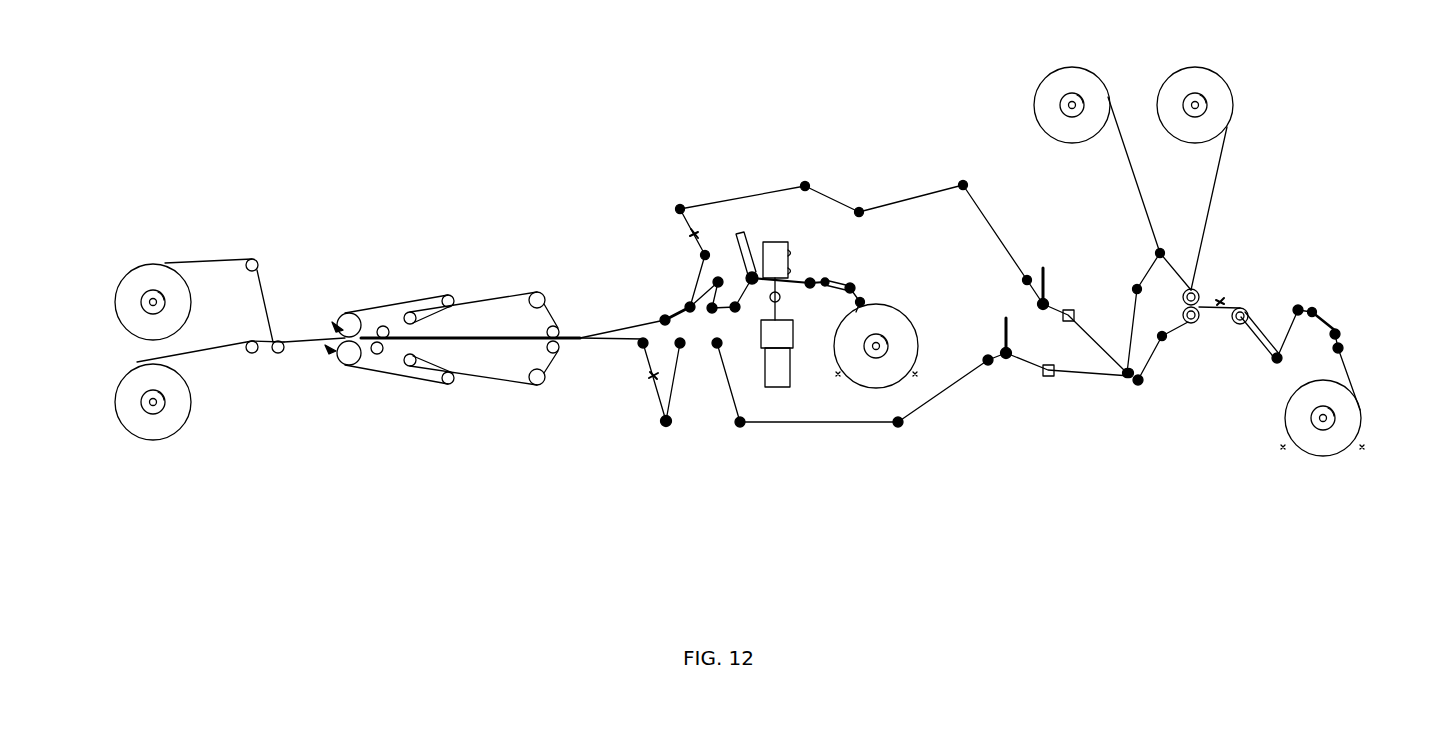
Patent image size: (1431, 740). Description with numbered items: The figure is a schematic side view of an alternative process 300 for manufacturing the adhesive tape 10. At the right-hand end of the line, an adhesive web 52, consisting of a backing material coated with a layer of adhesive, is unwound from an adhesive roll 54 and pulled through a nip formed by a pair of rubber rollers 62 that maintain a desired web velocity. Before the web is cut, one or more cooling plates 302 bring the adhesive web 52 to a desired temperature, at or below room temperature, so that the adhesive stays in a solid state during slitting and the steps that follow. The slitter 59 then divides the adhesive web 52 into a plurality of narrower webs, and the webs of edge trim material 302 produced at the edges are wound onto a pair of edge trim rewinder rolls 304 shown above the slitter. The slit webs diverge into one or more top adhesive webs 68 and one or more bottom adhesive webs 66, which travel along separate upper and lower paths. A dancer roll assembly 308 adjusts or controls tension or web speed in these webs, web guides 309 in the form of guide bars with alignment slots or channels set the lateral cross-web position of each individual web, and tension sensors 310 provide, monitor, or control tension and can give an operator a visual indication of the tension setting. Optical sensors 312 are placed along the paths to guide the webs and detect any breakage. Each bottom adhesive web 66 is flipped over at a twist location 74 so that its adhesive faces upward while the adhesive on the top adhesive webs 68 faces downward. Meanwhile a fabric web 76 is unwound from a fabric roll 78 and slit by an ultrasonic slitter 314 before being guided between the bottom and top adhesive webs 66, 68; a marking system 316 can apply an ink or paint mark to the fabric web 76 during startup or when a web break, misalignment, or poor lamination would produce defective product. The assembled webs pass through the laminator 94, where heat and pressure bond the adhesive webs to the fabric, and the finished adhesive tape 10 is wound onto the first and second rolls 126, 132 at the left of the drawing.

The alternative process 300 is at (414, 115).
The second roll 132 is at (118, 318).
The first roll 126 is at (174, 435).
The adhesive tape 10 is at (296, 345).
The laminator 94 is at (450, 405).
The optical sensors 312 is at (672, 244).
The ultrasonic slitter 314 is at (778, 241).
The marking system 316 is at (806, 265).
The fabric web 76 is at (783, 292).
The fabric roll 78 is at (900, 308).
The top adhesive webs 68 is at (904, 190).
The bottom adhesive webs 66 is at (805, 425).
The twist location 74 is at (674, 403).
The tension sensors 310 is at (1048, 268).
The web guides 309 is at (1072, 321).
The dancer roll assembly 308 is at (1142, 385).
The edge trim rewinder rolls 304 is at (1052, 70).
The cooling plates 302 is at (1133, 165).
The slitter 59 is at (1222, 300).
The rubber rollers 62 is at (1200, 318).
The adhesive web 52 is at (1352, 366).
The adhesive roll 54 is at (1310, 452).